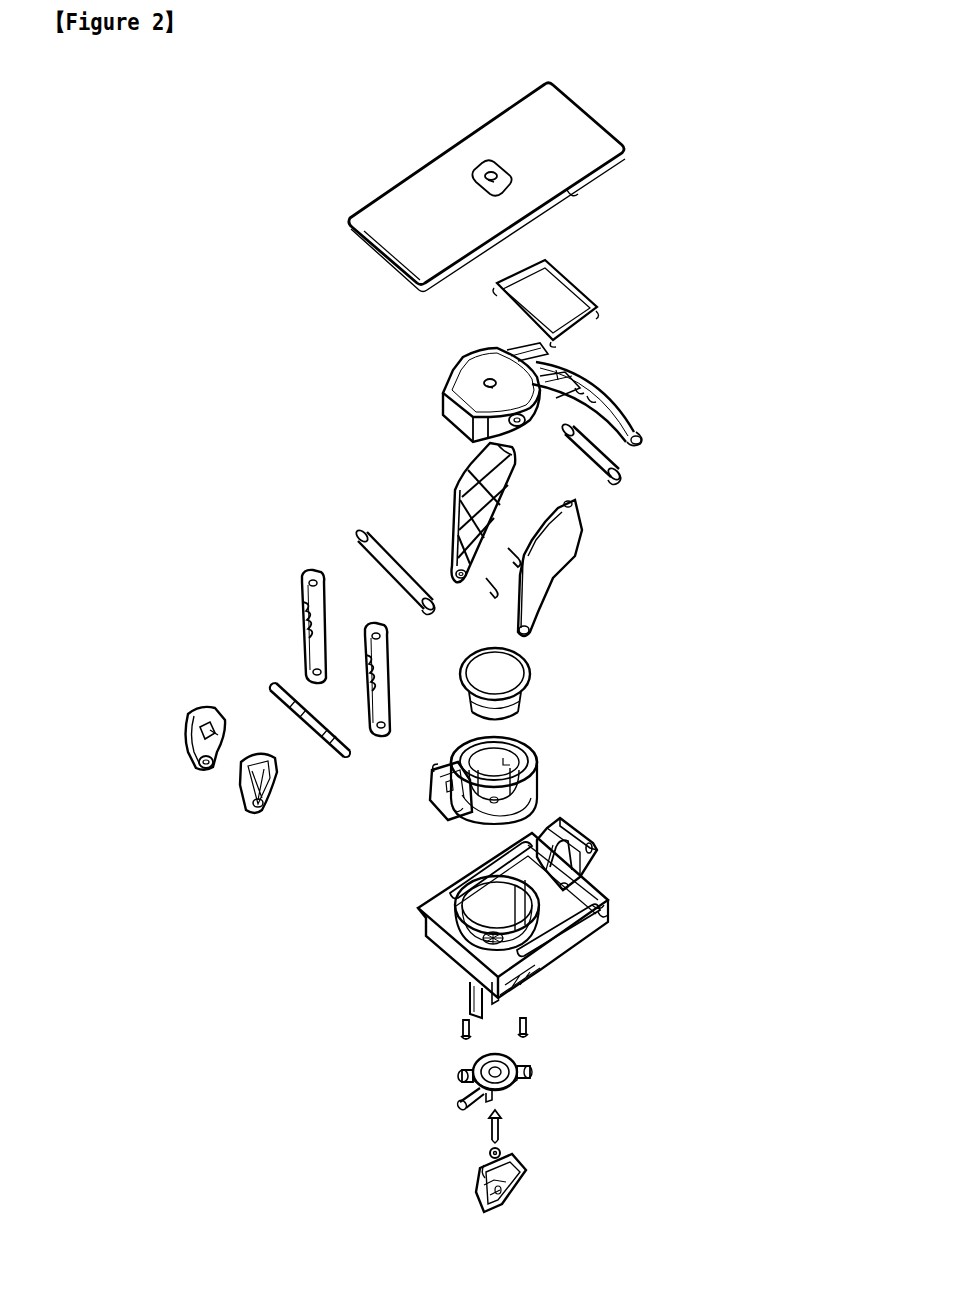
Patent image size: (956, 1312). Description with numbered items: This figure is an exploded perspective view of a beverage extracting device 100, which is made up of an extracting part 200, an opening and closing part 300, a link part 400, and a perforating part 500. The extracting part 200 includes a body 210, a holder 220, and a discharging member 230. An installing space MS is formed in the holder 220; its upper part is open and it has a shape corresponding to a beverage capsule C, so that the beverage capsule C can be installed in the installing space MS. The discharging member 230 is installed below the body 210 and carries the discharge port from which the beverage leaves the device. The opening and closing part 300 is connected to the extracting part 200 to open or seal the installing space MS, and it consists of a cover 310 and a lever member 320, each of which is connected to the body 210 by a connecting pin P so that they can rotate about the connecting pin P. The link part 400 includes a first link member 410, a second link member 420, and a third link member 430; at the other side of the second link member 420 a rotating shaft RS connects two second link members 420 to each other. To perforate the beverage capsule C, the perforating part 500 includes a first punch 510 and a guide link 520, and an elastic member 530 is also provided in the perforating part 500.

The beverage extracting device 100 is at (92, 109).
The opening and closing part 300 is at (262, 262).
The lever member 320 is at (402, 237).
The cover 310 is at (465, 380).
The connecting pin P is at (636, 430).
The link part 400 is at (108, 515).
The first link member 410 is at (457, 485).
The third link member 430 is at (315, 640).
The second link member 420 is at (196, 716).
The rotating shaft RS is at (342, 752).
The beverage capsule C is at (516, 673).
The installing space MS is at (508, 768).
The extracting part 200 is at (765, 802).
The holder 220 is at (590, 812).
The body 210 is at (604, 893).
The discharging member 230 is at (532, 1075).
The perforating part 500 is at (657, 1120).
The first punch 510 is at (500, 1135).
The elastic member 530 is at (502, 1152).
The guide link 520 is at (515, 1205).